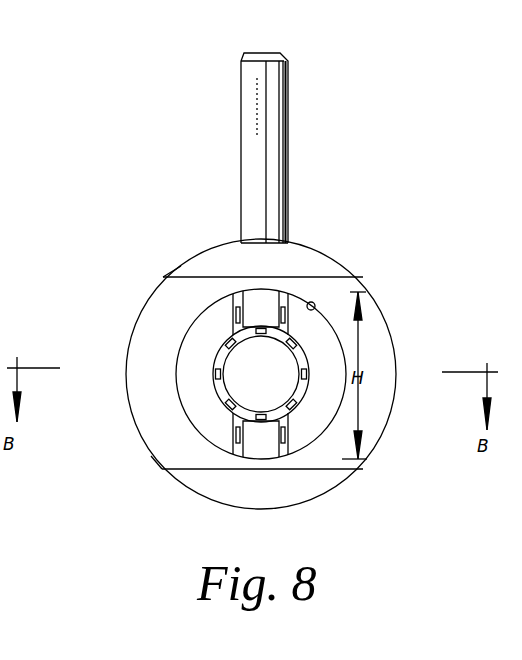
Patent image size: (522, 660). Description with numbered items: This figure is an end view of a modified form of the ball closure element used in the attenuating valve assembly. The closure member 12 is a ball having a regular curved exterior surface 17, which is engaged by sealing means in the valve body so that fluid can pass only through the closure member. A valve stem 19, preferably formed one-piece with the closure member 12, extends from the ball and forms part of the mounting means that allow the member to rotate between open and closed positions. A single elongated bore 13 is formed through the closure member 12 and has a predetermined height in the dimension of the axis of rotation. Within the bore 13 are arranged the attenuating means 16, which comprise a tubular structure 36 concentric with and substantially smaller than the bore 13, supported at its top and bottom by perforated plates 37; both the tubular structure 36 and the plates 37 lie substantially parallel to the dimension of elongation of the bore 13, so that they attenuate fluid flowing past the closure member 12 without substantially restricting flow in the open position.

The closure member 12 is at (158, 449).
The elongated bore 13 is at (318, 307).
The attenuating means 16 is at (210, 390).
The curved exterior surface 17 is at (137, 322).
The valve stem 19 is at (277, 177).
The tubular structure 36 is at (221, 350).
The perforated plates 37 is at (273, 445).